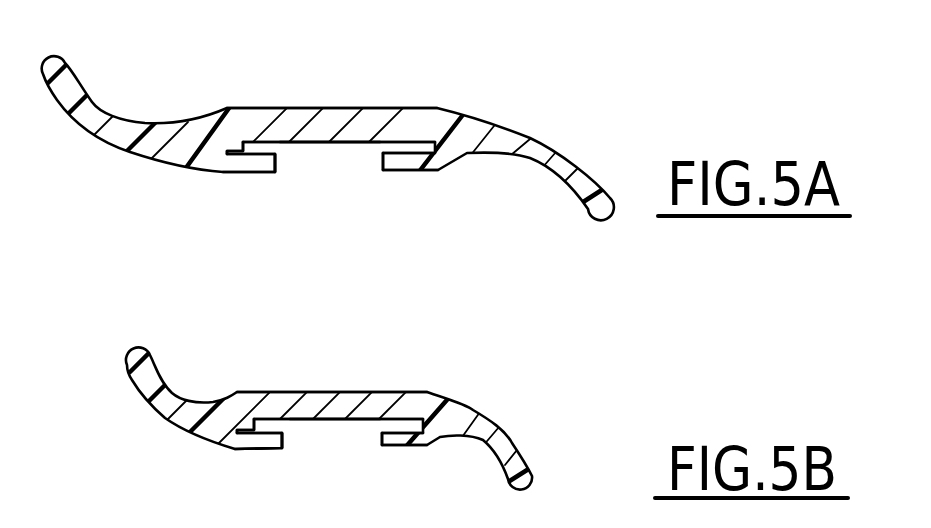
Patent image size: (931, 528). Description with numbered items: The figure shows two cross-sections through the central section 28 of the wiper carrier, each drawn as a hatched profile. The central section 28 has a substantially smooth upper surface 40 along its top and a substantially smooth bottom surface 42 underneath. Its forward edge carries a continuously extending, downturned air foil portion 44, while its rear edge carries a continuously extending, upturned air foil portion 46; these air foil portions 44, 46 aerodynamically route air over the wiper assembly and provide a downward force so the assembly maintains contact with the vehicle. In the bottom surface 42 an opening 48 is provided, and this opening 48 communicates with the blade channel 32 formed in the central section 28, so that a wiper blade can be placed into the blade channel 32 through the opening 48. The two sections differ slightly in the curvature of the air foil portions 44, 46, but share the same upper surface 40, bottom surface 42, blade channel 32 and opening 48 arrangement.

In FIG. 5A, the central section 28 is at (490, 113).
In FIG. 5B, the central section 28 is at (205, 441).
In FIG. 5A, the blade channel 32 is at (243, 147).
In FIG. 5B, the blade channel 32 is at (262, 427).
In FIG. 5A, the upper surface 40 is at (353, 108).
In FIG. 5B, the upper surface 40 is at (373, 392).
In FIG. 5A, the bottom surface 42 is at (245, 174).
In FIG. 5B, the bottom surface 42 is at (397, 443).
In FIG. 5A, the downturned air foil portion 44 is at (602, 194).
In FIG. 5B, the downturned air foil portion 44 is at (522, 460).
In FIG. 5A, the upturned air foil portion 46 is at (71, 90).
In FIG. 5B, the upturned air foil portion 46 is at (153, 377).
In FIG. 5A, the opening 48 is at (330, 163).
In FIG. 5B, the opening 48 is at (338, 442).